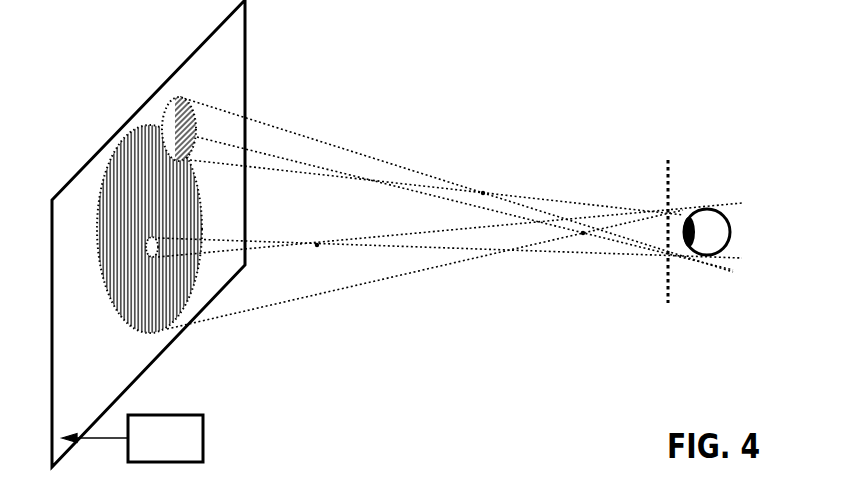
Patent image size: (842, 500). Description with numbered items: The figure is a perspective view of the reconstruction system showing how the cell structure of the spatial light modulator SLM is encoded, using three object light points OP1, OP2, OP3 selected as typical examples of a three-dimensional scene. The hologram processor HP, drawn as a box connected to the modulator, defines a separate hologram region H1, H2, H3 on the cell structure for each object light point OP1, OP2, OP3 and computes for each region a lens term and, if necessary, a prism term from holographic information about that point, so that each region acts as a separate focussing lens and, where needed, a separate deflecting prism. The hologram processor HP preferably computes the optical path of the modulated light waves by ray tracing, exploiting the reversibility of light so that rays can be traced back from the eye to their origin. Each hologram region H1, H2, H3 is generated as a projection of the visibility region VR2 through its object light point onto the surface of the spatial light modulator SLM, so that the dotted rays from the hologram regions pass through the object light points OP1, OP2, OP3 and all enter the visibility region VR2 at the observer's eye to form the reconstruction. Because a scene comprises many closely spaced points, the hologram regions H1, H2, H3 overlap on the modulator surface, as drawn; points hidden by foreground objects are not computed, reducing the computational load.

The spatial light modulator SLM is at (181, 233).
The hologram region H1 is at (152, 253).
The hologram region H2 is at (145, 320).
The hologram region H3 is at (168, 110).
The hologram processor HP is at (132, 438).
The object light point OP1 is at (316, 262).
The object light point OP2 is at (572, 263).
The object light point OP3 is at (490, 176).
The visibility region VR2 is at (699, 229).